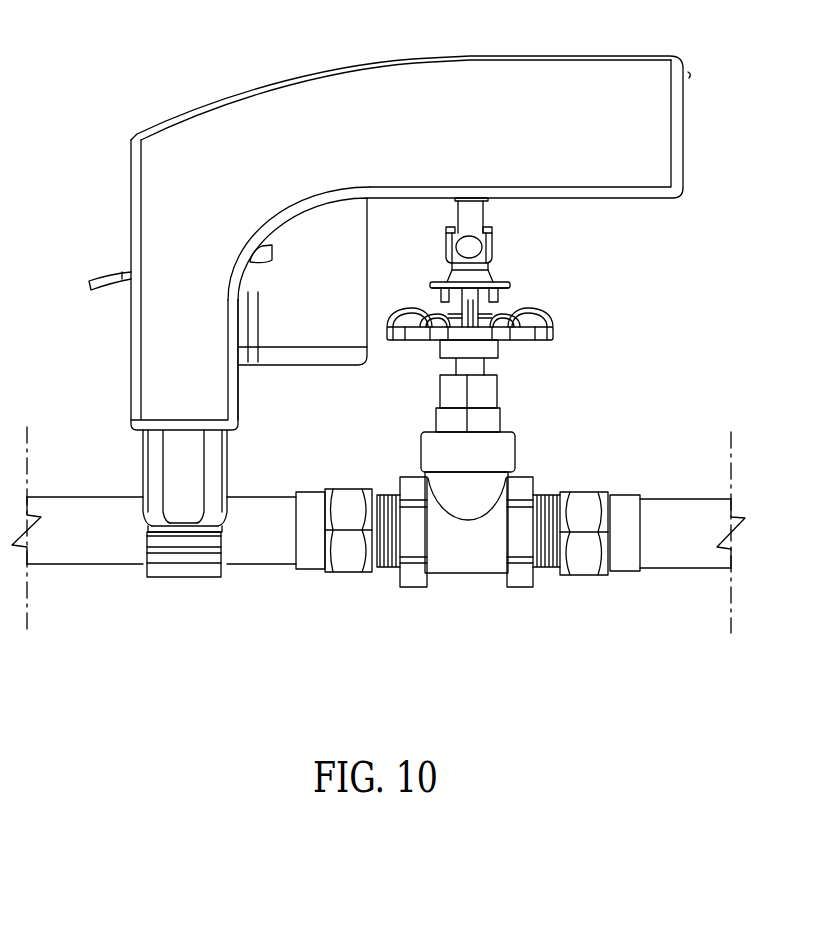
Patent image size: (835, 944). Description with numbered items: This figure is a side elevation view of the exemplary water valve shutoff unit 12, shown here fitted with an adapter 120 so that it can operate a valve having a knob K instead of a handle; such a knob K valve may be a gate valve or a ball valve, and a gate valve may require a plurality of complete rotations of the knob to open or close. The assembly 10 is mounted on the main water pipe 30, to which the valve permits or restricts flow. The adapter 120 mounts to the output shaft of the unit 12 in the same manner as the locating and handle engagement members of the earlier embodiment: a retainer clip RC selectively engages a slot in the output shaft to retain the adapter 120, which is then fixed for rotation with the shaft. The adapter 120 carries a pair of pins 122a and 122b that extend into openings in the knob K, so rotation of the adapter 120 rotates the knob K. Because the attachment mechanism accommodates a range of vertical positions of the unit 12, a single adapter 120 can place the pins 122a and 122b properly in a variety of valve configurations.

The faucet assembly 10 is at (114, 54).
The water valve shutoff unit 12 is at (623, 55).
The retainer clip RC is at (474, 250).
The adapter 120 is at (487, 270).
The pin 122a is at (440, 297).
The pin 122b is at (497, 297).
The knob K is at (540, 333).
The main water pipe 30 is at (667, 557).